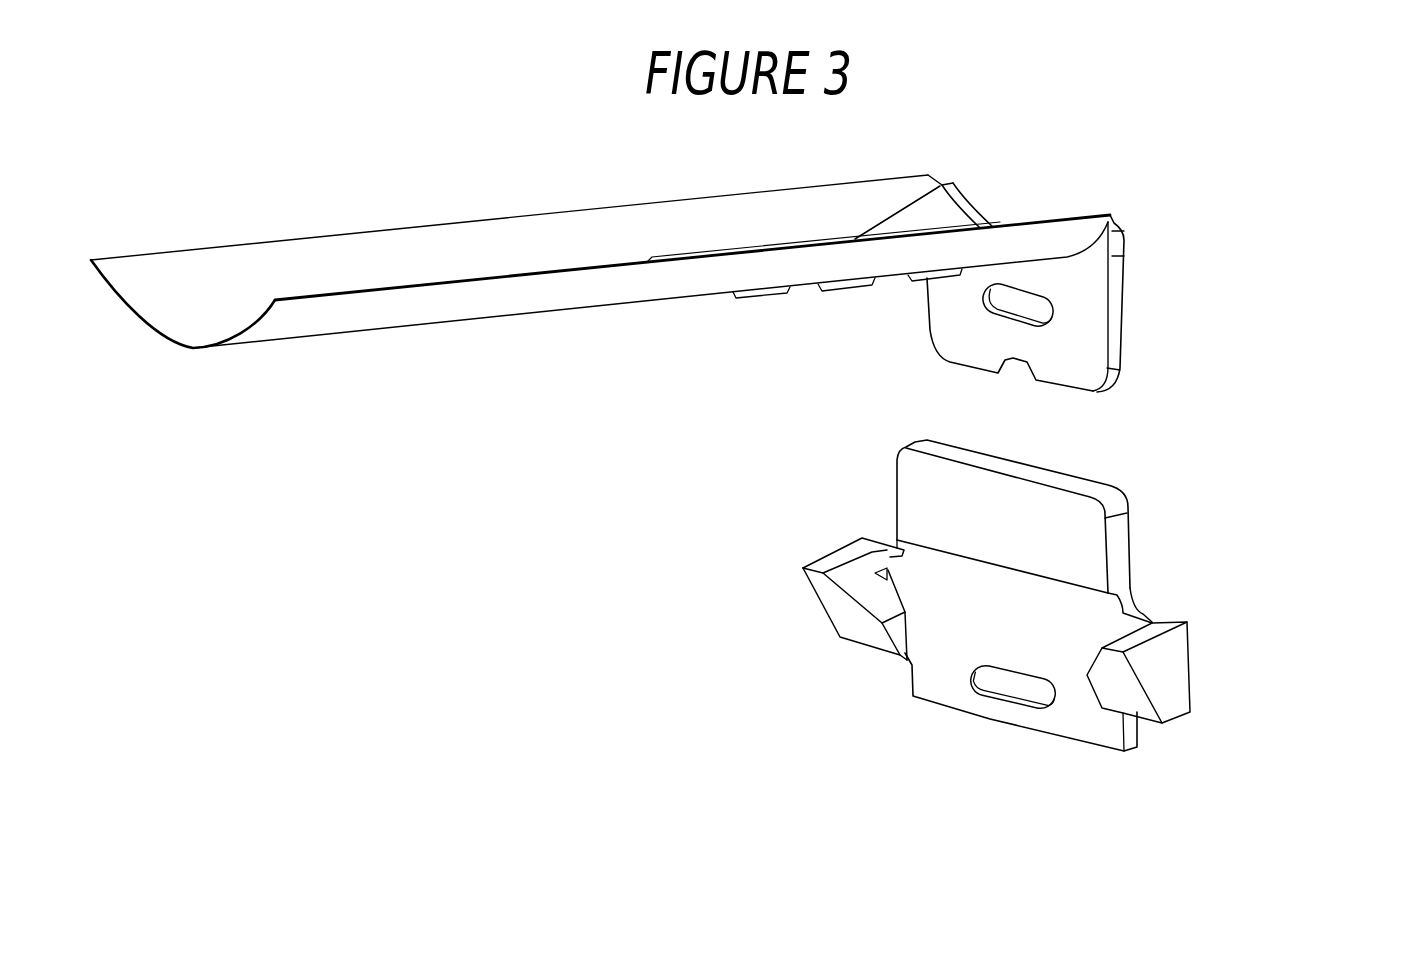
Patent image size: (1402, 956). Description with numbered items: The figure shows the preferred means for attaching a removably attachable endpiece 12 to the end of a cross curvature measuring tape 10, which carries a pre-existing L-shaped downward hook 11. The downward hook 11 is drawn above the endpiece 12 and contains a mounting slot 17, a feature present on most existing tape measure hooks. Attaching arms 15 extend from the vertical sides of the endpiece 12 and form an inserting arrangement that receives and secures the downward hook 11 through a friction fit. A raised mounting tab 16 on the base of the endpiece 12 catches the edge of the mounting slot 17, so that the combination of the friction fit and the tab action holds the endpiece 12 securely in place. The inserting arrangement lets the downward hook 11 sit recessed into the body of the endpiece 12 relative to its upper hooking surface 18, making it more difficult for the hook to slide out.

The cross curvature measuring tape 10 is at (343, 250).
The downward hook 11 is at (1058, 340).
The mounting slot 17 is at (1015, 308).
The removably attachable endpiece 12 is at (1018, 641).
The upper hooking surface 18 is at (1092, 512).
The attaching arms 15 is at (823, 616).
The raised mounting tab 16 is at (1003, 699).